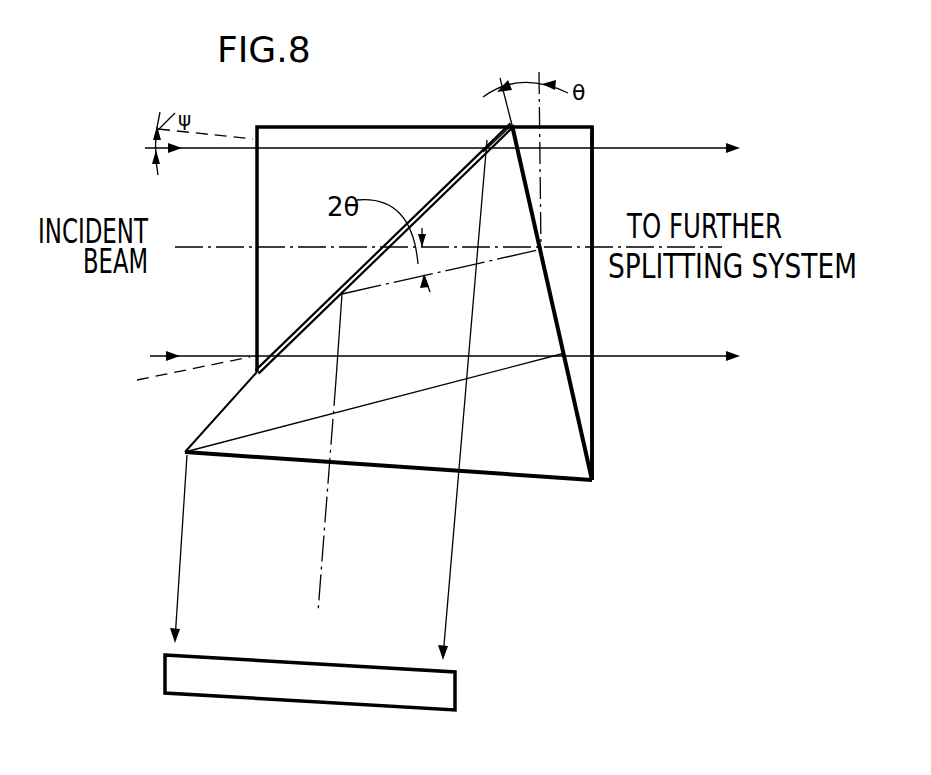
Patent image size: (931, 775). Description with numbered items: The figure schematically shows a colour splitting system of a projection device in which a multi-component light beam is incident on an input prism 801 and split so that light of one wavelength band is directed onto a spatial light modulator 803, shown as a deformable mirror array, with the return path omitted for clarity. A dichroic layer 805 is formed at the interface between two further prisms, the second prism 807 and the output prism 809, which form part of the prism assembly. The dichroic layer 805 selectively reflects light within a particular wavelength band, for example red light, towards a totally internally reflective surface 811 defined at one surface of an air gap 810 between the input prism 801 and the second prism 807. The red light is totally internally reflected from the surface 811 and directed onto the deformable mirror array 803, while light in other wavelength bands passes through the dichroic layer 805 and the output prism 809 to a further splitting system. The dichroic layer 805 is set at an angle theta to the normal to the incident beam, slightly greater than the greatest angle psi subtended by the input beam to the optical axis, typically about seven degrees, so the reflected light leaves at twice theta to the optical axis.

The input prism 801 is at (320, 137).
The spatial light modulator 803 is at (440, 678).
The dichroic layer 805 is at (573, 402).
The second prism 807 is at (418, 455).
The output prism 809 is at (572, 200).
The air gap 810 is at (303, 323).
The totally internally reflective surface 811 is at (307, 348).